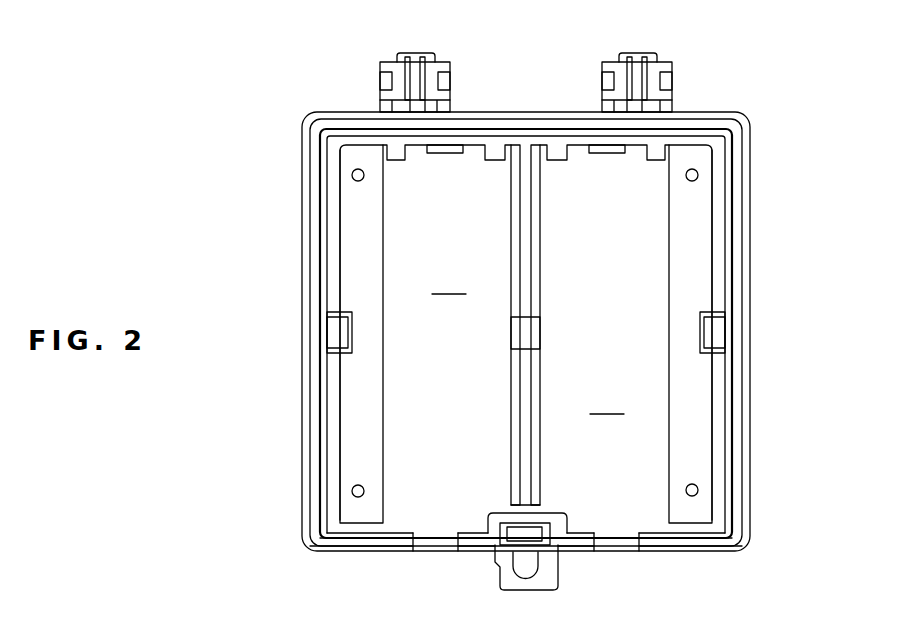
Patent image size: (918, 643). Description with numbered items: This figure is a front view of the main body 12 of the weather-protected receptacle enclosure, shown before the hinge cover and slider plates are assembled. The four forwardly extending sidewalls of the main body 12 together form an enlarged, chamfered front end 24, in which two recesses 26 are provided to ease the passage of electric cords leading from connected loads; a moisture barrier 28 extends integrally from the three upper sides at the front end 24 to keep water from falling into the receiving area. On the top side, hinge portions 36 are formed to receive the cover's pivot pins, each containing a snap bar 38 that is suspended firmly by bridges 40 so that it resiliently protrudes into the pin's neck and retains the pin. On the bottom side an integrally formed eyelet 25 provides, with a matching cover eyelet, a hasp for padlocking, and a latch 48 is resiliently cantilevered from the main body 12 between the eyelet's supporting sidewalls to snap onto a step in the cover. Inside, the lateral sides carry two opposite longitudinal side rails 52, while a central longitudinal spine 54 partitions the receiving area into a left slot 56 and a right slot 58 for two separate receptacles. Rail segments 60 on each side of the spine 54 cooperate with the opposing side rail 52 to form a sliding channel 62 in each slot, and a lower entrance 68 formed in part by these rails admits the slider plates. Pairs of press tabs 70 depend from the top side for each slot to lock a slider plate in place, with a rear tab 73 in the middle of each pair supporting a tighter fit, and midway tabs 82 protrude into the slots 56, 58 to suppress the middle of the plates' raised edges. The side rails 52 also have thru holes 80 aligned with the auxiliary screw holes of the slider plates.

The main body 12 is at (270, 160).
The front end 24 is at (752, 448).
The eyelet 25 is at (542, 574).
The recesses 26 is at (418, 542).
The moisture barrier 28 is at (752, 228).
The hinge portions 36 is at (440, 62).
The snap bars 38 is at (410, 82).
The bridges 40 is at (416, 56).
The latch 48 is at (508, 540).
The side rails 52 is at (384, 398).
The longitudinal spine 54 is at (526, 257).
The left slot 56 is at (449, 278).
The right slot 58 is at (607, 400).
The rail segments 60 is at (537, 428).
The sliding channel 62 is at (341, 440).
The lower entrance 68 is at (357, 530).
The press tabs 70 is at (400, 157).
The rear tab 73 is at (447, 154).
The thru holes 80 is at (364, 178).
The midway tabs 82 is at (345, 335).